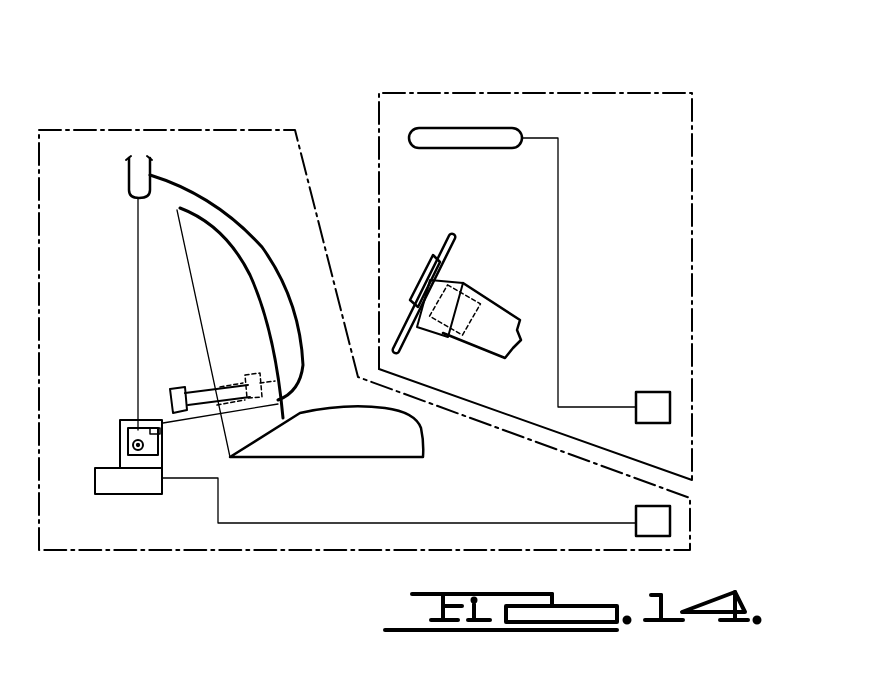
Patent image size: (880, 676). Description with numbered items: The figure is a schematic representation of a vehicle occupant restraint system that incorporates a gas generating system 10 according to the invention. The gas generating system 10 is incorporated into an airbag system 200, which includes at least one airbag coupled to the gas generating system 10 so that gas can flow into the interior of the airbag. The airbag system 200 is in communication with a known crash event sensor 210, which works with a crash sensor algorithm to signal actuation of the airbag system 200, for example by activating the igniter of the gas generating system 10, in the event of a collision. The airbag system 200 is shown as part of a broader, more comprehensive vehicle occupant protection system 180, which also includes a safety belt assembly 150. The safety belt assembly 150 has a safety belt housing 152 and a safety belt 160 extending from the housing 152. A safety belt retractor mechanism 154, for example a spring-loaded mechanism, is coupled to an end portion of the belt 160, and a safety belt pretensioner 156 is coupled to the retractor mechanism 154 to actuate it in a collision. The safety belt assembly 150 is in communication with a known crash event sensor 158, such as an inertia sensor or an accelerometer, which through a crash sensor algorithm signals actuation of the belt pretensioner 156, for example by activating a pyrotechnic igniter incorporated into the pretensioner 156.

The gas generating system 10 is at (472, 126).
The safety belt assembly 150 is at (152, 552).
The safety belt housing 152 is at (128, 445).
The safety belt retractor mechanism 154 is at (128, 425).
The safety belt pretensioner 156 is at (125, 480).
The crash event sensor 158 is at (660, 525).
The safety belt 160 is at (242, 213).
The vehicle occupant protection system 180 is at (232, 120).
The airbag system 200 is at (692, 197).
The crash event sensor 210 is at (660, 407).